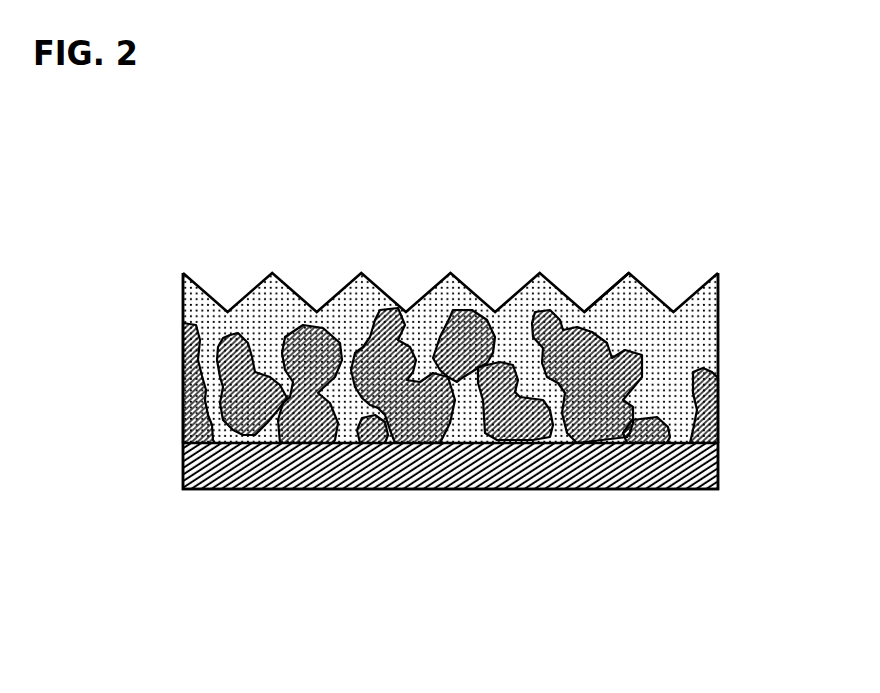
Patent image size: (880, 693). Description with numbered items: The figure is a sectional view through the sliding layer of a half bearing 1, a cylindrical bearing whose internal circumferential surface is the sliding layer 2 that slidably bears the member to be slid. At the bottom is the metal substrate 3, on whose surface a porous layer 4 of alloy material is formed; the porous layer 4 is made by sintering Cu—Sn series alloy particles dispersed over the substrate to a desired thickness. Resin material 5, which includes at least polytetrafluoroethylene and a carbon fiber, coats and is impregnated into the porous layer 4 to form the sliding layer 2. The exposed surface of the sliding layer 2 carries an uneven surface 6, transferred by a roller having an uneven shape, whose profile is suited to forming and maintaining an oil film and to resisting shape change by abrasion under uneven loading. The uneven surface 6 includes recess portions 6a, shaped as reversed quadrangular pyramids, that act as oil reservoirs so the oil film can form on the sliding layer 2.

The half bearing 1 is at (245, 238).
The sliding layer 2 is at (735, 275).
The metal substrate 3 is at (183, 468).
The porous layer 4 is at (183, 407).
The resin material 5 is at (190, 303).
The uneven surface 6 is at (500, 278).
The recess portion 6a is at (577, 298).